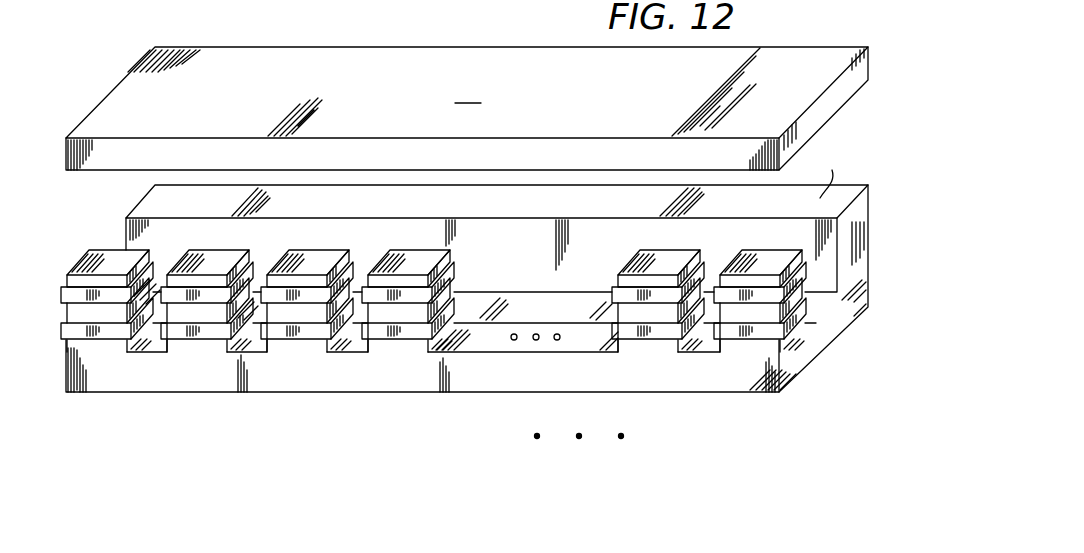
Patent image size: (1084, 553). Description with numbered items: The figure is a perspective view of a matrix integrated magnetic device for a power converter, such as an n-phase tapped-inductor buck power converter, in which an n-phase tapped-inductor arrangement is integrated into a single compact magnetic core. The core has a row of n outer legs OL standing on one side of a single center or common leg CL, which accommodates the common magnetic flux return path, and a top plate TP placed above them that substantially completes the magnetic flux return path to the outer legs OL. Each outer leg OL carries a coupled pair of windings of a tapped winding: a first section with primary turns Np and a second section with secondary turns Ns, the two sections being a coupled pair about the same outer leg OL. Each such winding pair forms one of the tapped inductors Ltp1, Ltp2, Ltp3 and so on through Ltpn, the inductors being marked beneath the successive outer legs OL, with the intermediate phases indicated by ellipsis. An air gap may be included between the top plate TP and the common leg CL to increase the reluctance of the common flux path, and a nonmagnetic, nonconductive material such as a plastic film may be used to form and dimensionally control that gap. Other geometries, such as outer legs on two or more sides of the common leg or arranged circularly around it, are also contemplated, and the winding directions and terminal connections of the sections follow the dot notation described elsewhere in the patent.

The top plate TP is at (467, 108).
The common leg CL is at (467, 270).
The outer leg OL is at (108, 260).
The secondary turns Ns is at (90, 284).
The primary turns Np is at (90, 322).
The tapped inductor Ltp1 is at (96, 404).
The tapped inductor Ltp2 is at (196, 404).
The tapped inductor Ltp3 is at (297, 404).
The tapped inductor Ltpn is at (748, 404).